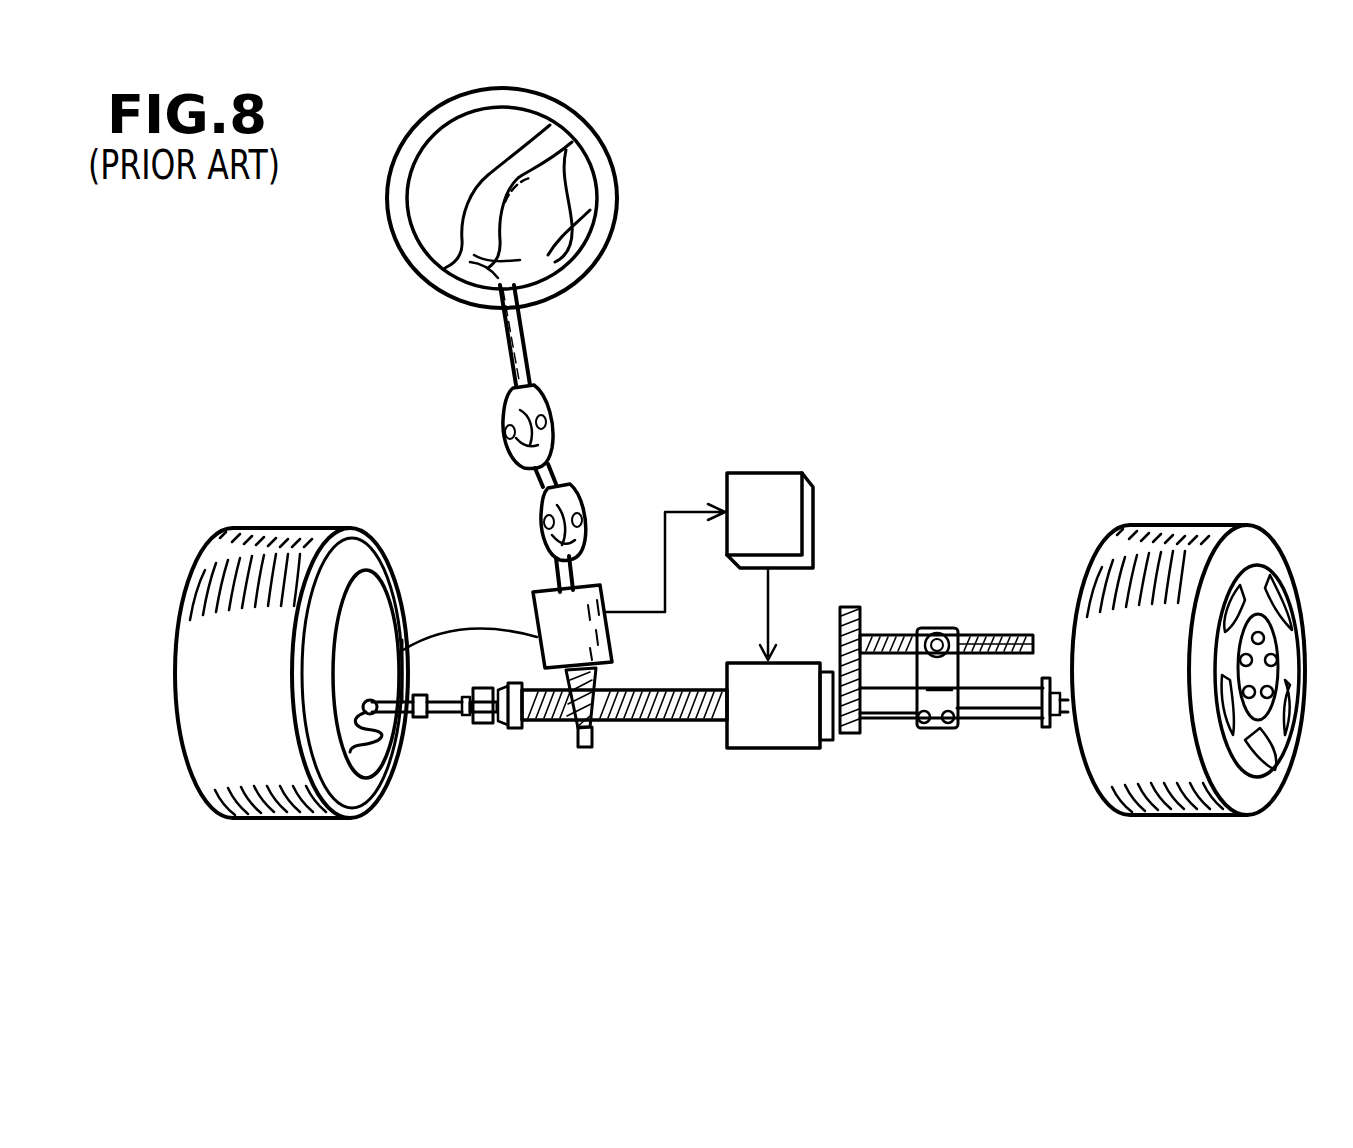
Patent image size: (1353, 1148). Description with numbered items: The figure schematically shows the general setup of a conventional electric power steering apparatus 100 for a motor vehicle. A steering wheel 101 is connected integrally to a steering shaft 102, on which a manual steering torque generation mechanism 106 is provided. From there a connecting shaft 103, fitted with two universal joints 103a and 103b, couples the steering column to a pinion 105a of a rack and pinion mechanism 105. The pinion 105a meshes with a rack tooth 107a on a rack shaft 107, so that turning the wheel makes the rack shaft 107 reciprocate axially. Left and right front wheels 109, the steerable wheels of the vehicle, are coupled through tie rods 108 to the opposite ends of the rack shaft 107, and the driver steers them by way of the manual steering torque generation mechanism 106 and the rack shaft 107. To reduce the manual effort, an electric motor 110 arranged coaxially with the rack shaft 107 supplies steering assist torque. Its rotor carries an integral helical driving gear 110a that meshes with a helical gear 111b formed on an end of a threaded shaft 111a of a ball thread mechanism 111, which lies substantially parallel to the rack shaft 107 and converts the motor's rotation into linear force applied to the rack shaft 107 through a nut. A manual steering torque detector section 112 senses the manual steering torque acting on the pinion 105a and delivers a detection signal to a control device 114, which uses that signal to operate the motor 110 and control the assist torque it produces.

The electric power steering apparatus 100 is at (922, 127).
The steering wheel 101 is at (593, 143).
The steering shaft 102 is at (520, 310).
The connecting shaft 103 is at (543, 502).
The universal joint 103a is at (547, 410).
The universal joint 103b is at (583, 507).
The rack and pinion mechanism 105 is at (540, 727).
The pinion 105a is at (563, 733).
The manual steering torque generation mechanism 106 is at (333, 347).
The rack shaft 107 is at (1000, 720).
The rack tooth 107a is at (655, 720).
The tie rod 108 is at (420, 730).
The front wheel 109 is at (263, 528).
The electric motor 110 is at (765, 747).
The helical driving gear 110a is at (847, 740).
The ball thread mechanism 111 is at (938, 627).
The threaded shaft 111a is at (1000, 637).
The helical gear 111b is at (853, 608).
The manual steering torque detector section 112 is at (403, 650).
The control device 114 is at (813, 517).